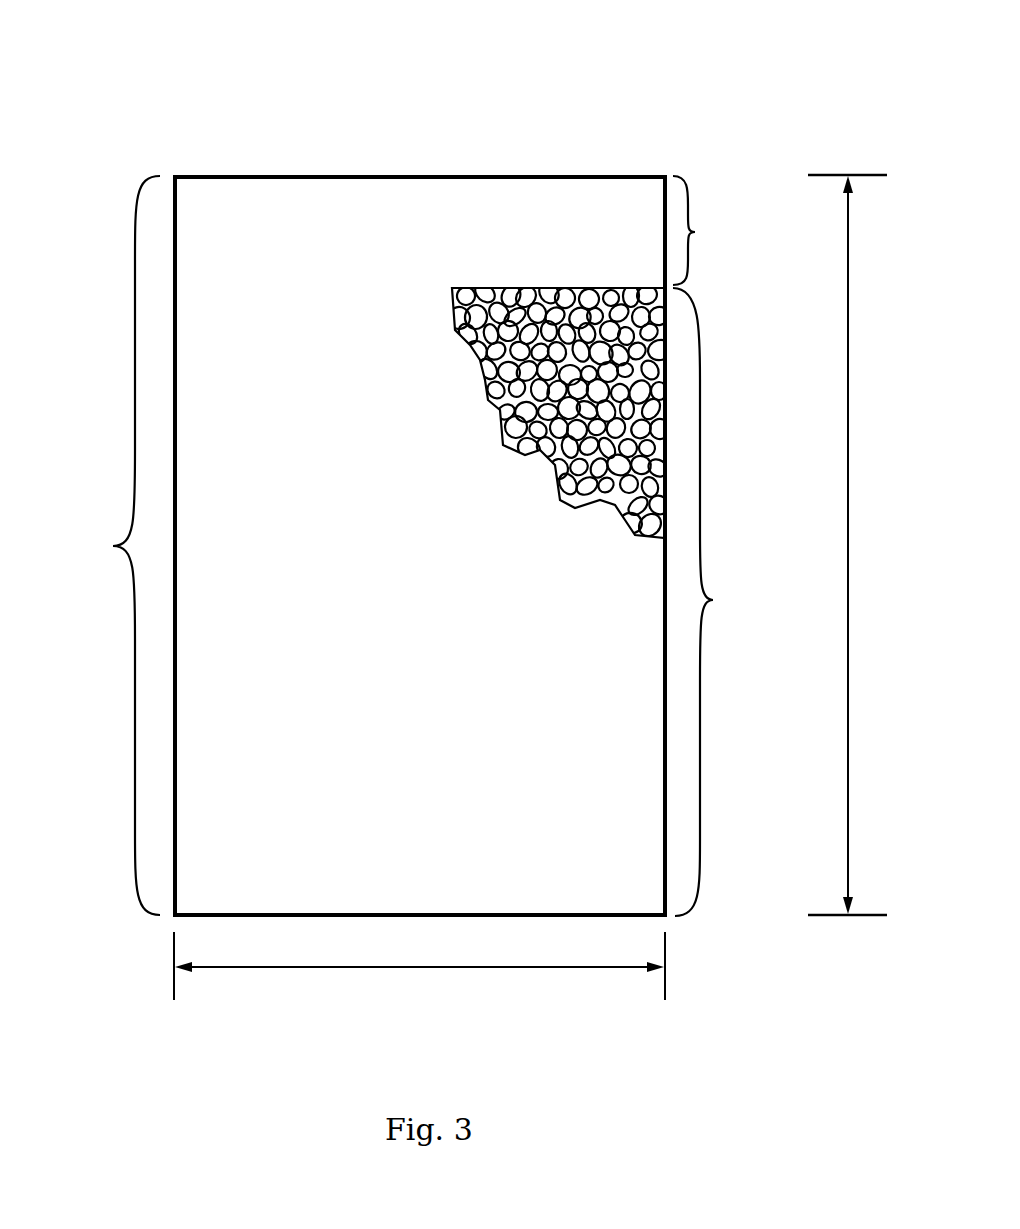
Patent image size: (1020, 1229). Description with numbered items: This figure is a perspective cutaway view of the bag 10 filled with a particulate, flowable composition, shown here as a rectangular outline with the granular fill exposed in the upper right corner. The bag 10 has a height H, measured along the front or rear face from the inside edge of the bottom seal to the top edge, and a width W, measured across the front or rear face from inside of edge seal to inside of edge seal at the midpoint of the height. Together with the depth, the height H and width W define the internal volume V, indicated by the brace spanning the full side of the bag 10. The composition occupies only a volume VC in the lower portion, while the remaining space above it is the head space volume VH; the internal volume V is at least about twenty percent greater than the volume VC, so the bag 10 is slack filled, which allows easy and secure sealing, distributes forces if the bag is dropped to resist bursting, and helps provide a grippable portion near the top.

The bag 10 is at (346, 128).
The internal volume V is at (113, 546).
The head space volume VH is at (695, 232).
The volume occupied by the composition VC is at (713, 600).
The height H is at (847, 545).
The width W is at (419, 971).